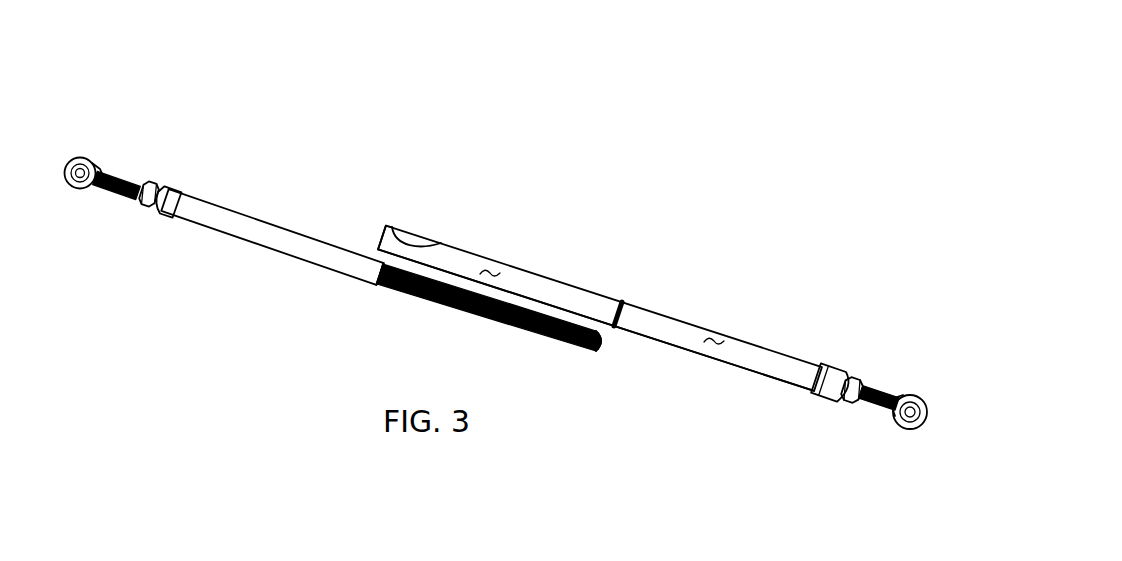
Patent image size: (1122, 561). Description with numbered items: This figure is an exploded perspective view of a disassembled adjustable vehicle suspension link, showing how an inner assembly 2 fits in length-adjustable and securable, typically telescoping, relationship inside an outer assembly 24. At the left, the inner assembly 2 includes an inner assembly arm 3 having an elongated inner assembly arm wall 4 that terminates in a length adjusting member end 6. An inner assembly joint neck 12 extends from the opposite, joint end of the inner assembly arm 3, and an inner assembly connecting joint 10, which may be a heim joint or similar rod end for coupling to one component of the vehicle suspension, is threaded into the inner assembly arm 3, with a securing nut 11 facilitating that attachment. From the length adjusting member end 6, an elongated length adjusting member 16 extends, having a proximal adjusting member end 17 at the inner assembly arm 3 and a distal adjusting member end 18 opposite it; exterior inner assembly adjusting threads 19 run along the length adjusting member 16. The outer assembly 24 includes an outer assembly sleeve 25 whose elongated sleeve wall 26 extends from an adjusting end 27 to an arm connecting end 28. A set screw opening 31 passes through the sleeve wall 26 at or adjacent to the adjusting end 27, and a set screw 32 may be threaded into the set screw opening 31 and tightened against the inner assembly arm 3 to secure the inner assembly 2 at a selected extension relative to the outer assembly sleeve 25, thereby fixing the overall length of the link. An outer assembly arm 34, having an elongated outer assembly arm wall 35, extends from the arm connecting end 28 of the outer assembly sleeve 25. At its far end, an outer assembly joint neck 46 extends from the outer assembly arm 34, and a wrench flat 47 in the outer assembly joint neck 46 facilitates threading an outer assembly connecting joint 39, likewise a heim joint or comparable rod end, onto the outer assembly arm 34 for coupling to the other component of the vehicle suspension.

The inner assembly 2 is at (283, 196).
The inner assembly arm 3 is at (272, 268).
The inner assembly arm wall 4 is at (300, 244).
The length adjusting member end 6 is at (390, 272).
The inner assembly connecting joint 10 is at (88, 158).
The securing nut 11 is at (153, 183).
The inner assembly joint neck 12 is at (171, 207).
The length adjusting member 16 is at (589, 360).
The proximal adjusting member end 17 is at (370, 265).
The distal adjusting member end 18 is at (606, 347).
The inner assembly adjusting threads 19 is at (450, 302).
The outer assembly 24 is at (592, 306).
The outer assembly sleeve 25 is at (558, 273).
The sleeve wall 26 is at (492, 272).
The adjusting end 27 is at (387, 220).
The arm connecting end 28 is at (621, 304).
The set screw opening 31 is at (442, 238).
The set screw 32 is at (403, 214).
The outer assembly arm 34 is at (773, 385).
The outer assembly arm wall 35 is at (712, 338).
The outer assembly connecting joint 39 is at (927, 397).
The outer assembly joint neck 46 is at (819, 398).
The wrench flat 47 is at (840, 374).